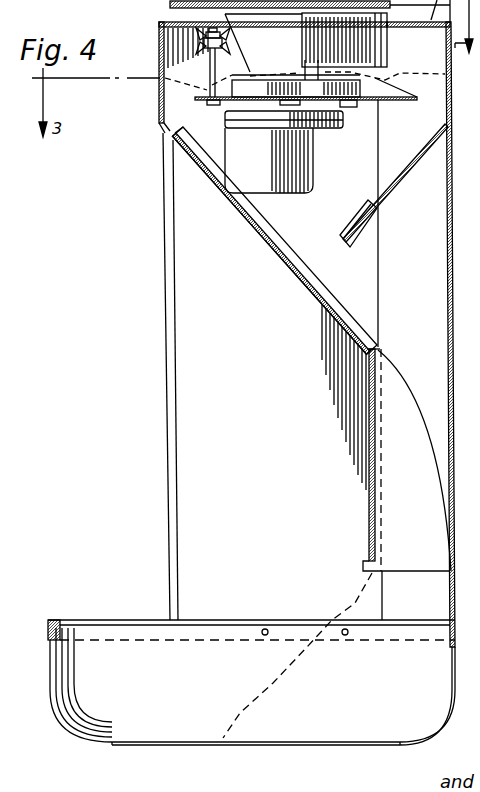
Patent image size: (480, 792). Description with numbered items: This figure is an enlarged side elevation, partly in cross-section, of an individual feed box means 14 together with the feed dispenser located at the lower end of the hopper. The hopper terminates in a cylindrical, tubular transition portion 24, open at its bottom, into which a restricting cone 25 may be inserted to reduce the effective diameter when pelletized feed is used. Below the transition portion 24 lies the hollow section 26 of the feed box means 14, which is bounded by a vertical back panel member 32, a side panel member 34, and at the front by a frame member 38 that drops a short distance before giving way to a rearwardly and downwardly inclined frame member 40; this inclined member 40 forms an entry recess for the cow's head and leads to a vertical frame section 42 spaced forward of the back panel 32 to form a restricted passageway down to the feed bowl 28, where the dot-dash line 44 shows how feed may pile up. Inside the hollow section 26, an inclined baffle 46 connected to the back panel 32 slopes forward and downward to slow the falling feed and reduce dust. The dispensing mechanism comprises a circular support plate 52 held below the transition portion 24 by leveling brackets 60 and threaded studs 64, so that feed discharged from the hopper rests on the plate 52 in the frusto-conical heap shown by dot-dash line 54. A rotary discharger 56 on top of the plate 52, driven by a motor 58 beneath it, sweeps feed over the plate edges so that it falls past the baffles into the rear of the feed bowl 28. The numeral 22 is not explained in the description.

The feed box means 14 is at (152, 233).
The housing base 22 is at (470, 692).
The transition portion 24 is at (365, 57).
The restricting cone 25 is at (258, 52).
The hollow section 26 is at (453, 90).
The feed bowl 28 is at (122, 637).
The back panel member 32 is at (449, 229).
The side panel member 34 is at (188, 328).
The frame member 38 is at (160, 102).
The inclined frame member 40 is at (240, 207).
The vertical frame section 42 is at (369, 456).
The dot-dash line 44 is at (355, 600).
The inclined baffle 46 is at (378, 206).
The circular support plate 52 is at (387, 100).
The dot-dash line 54 is at (165, 80).
The rotary discharger 56 is at (363, 90).
The motor 58 is at (318, 170).
The leveling bracket 60 is at (203, 42).
The threaded stud 64 is at (212, 74).